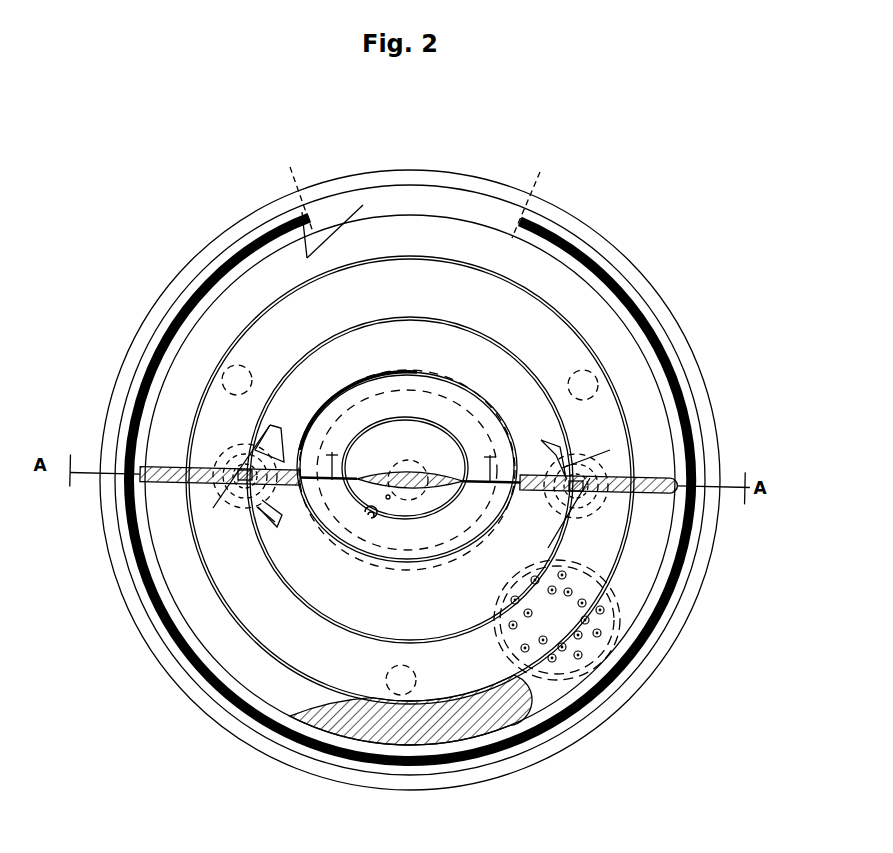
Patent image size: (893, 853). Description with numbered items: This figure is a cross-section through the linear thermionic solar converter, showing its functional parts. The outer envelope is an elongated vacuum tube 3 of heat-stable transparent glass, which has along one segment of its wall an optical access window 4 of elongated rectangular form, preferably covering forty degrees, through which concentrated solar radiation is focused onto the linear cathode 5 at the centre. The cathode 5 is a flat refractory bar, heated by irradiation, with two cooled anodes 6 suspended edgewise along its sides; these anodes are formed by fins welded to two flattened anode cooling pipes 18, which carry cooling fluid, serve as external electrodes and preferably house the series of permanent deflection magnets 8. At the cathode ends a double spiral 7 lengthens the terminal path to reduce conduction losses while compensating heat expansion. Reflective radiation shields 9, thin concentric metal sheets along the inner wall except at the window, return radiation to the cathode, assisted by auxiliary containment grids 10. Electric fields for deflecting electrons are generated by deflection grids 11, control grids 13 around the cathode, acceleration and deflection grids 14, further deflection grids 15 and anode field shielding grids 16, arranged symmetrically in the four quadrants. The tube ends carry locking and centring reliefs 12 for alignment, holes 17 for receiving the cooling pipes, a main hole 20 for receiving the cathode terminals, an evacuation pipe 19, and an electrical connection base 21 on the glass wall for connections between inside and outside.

The vacuum tube 3 is at (652, 297).
The access window 4 is at (500, 212).
The linear cathode 5 is at (413, 476).
The cooled anodes 6 is at (410, 480).
The double spiral 7 is at (497, 667).
The permanent deflection magnets 8 is at (243, 497).
The reflective radiation shields 9 is at (516, 218).
The auxiliary containment grids 10 is at (405, 223).
The deflection grids 11 is at (413, 200).
The locking and centring reliefs 12 is at (252, 378).
The control grids 13 is at (405, 495).
The acceleration and deflection grids 14 is at (357, 505).
The deflection grids 15 is at (418, 467).
The anode field shielding grids 16 is at (271, 525).
The holes for receiving the cooling pipes 17 is at (238, 446).
The anode cooling pipes 18 is at (232, 443).
The evacuation pipe 19 is at (381, 527).
The main hole for receiving cathode terminals 20 is at (393, 560).
The electrical connection base 21 is at (507, 630).